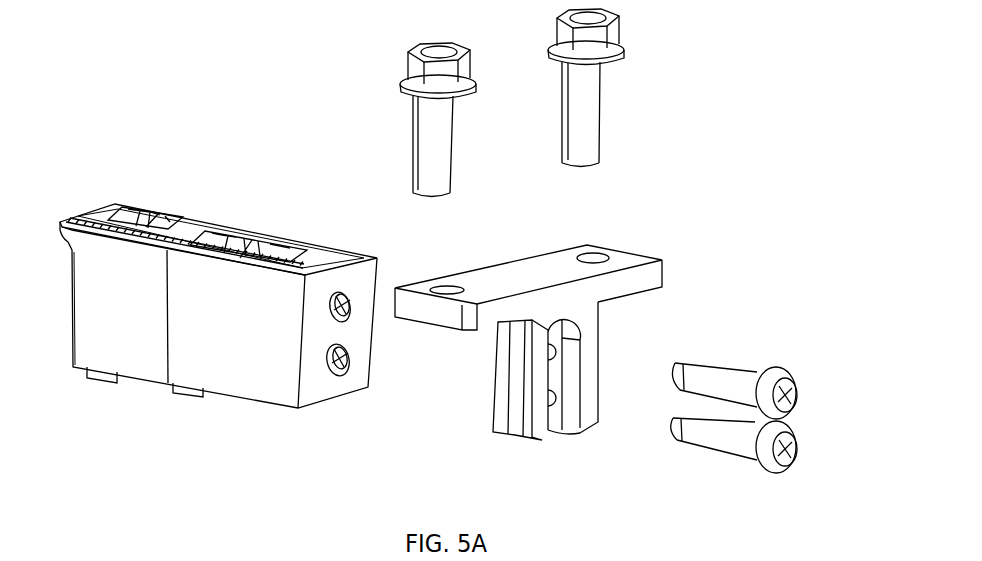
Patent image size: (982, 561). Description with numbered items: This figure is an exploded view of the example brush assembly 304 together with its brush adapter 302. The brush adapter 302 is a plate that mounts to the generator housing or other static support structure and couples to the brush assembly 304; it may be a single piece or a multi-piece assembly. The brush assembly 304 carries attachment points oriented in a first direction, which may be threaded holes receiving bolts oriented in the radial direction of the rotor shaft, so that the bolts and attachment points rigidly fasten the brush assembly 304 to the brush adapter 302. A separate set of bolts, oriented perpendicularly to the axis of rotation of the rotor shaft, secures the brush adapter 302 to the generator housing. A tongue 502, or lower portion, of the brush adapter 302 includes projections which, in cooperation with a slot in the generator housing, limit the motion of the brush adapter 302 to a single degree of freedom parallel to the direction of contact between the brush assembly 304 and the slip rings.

The brush assembly 304 is at (250, 298).
The brush adapter 302 is at (551, 346).
The tongue 502 is at (475, 437).